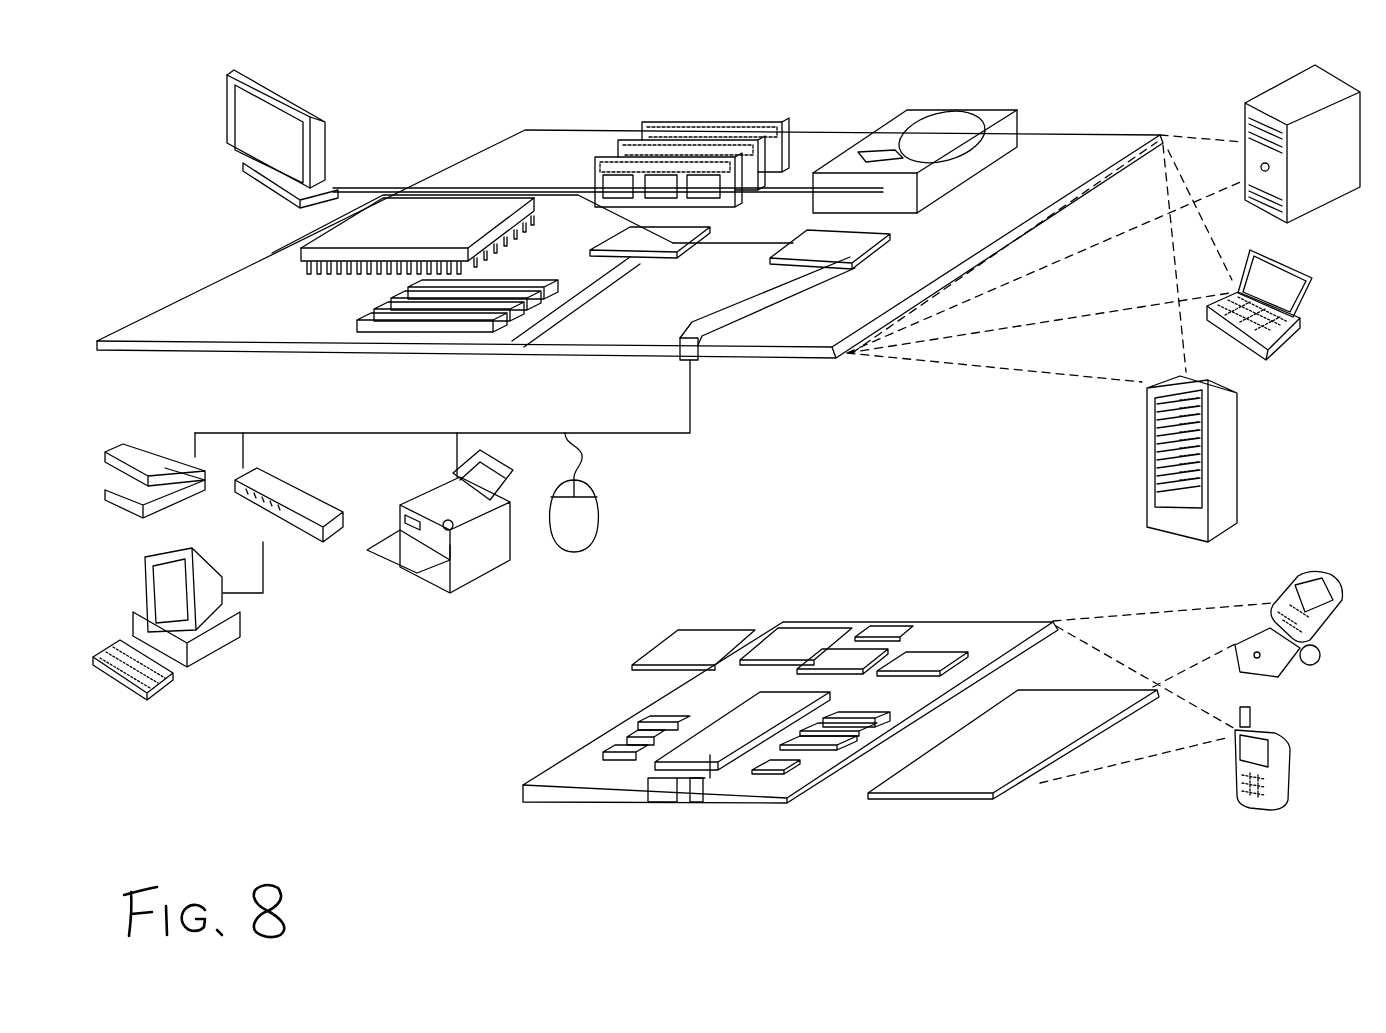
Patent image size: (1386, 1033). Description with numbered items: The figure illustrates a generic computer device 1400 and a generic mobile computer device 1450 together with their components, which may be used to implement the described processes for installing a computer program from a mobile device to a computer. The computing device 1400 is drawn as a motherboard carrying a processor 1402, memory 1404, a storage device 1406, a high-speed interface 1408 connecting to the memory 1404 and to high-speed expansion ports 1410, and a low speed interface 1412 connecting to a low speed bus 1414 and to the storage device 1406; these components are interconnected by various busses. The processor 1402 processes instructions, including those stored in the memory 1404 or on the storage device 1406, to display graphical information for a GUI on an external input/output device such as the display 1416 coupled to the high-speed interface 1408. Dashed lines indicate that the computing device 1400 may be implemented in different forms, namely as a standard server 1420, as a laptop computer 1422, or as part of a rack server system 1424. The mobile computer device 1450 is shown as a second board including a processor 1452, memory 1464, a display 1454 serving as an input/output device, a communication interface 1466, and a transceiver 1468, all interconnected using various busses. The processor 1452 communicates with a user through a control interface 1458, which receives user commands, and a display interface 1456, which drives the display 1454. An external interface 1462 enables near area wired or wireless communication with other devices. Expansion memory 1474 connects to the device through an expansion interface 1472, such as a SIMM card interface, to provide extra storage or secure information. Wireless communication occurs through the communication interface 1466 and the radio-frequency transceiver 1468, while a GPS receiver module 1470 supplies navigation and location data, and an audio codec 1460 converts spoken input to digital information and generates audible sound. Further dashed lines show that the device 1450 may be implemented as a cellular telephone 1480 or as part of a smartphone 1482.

The computing device 1400 is at (437, 98).
The processor 1402 is at (263, 253).
The memory 1404 is at (650, 157).
The storage device 1406 is at (900, 110).
The high-speed interface 1408 is at (557, 187).
The high-speed expansion ports 1410 is at (357, 318).
The low speed interface 1412 is at (808, 236).
The low speed bus 1414 is at (702, 352).
The display 1416 is at (227, 72).
The standard server 1420 is at (1245, 104).
The laptop computer 1422 is at (1312, 280).
The rack server system 1424 is at (1148, 482).
The mobile computer device 1450 is at (497, 797).
The processor 1452 is at (705, 790).
The display 1454 is at (985, 780).
The display interface 1456 is at (788, 774).
The control interface 1458 is at (830, 753).
The audio codec 1460 is at (855, 737).
The external interface 1462 is at (676, 802).
The memory 1464 is at (617, 742).
The communication interface 1466 is at (833, 662).
The transceiver 1468 is at (922, 662).
The GPS receiver module 1470 is at (888, 625).
The expansion interface 1472 is at (755, 630).
The expansion memory 1474 is at (683, 632).
The cellular telephone 1480 is at (1293, 578).
The smartphone 1482 is at (1233, 770).